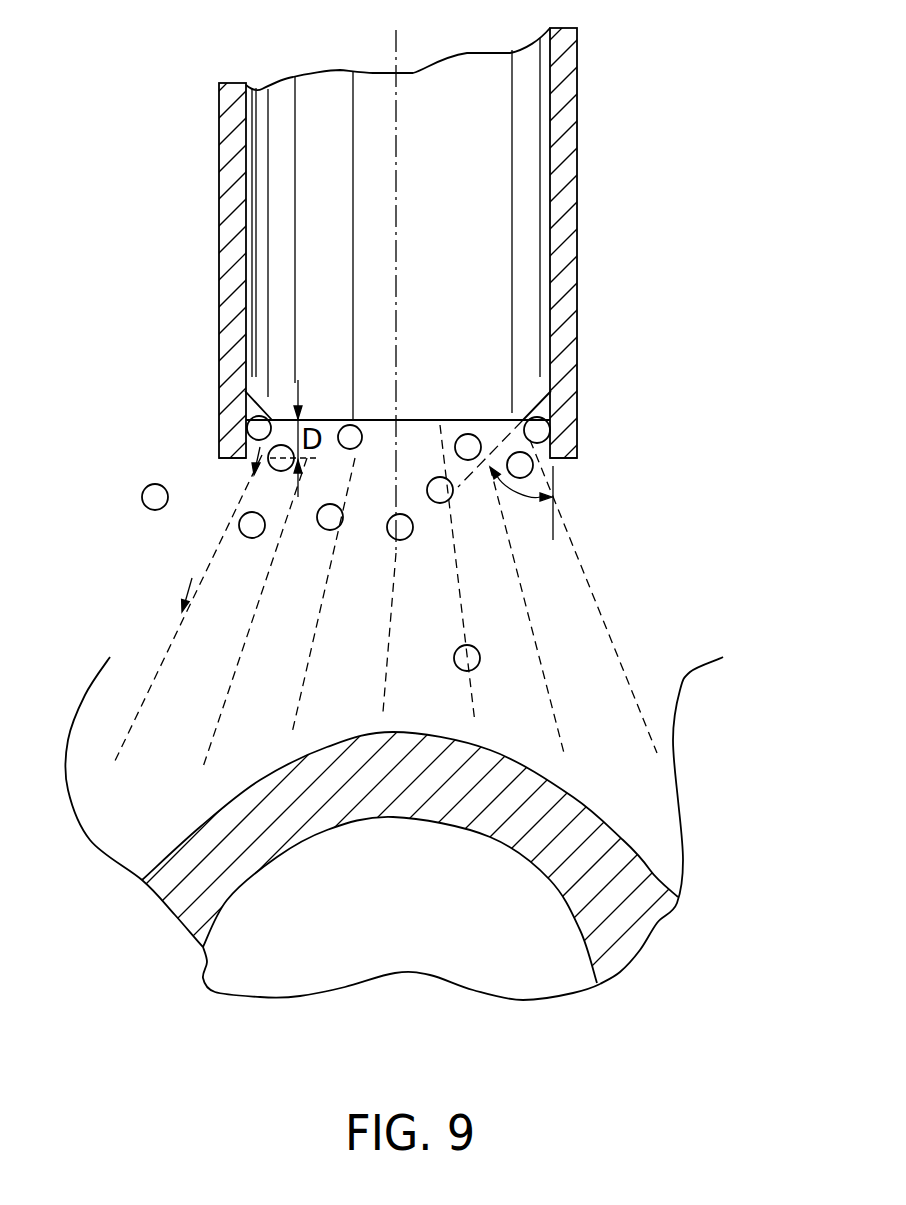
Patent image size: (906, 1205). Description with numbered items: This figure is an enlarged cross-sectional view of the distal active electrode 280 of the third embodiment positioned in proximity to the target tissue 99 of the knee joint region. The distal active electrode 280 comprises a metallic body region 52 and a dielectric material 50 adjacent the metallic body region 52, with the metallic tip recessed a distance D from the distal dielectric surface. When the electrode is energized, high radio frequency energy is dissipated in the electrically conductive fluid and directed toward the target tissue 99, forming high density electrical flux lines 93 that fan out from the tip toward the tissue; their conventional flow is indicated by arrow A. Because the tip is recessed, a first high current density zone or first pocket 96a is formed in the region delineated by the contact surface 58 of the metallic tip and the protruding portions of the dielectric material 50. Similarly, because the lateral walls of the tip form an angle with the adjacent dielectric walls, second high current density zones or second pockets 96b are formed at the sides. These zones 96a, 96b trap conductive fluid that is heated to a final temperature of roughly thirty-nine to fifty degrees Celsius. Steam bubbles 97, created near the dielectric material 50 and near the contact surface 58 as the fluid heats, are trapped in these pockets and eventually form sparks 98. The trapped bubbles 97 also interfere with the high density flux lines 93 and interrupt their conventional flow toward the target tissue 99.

The distal active electrode 280 is at (624, 103).
The dielectric material 50 is at (568, 208).
The metallic body region 52 is at (490, 172).
The contact surface 58 is at (333, 418).
The first high current density zone 96a is at (403, 460).
The second high current density zones 96b is at (236, 412).
The steam bubbles 97 is at (144, 501).
The sparks 98 is at (505, 449).
The high density electrical flux lines 93 is at (241, 658).
The target tissue 99 is at (633, 878).